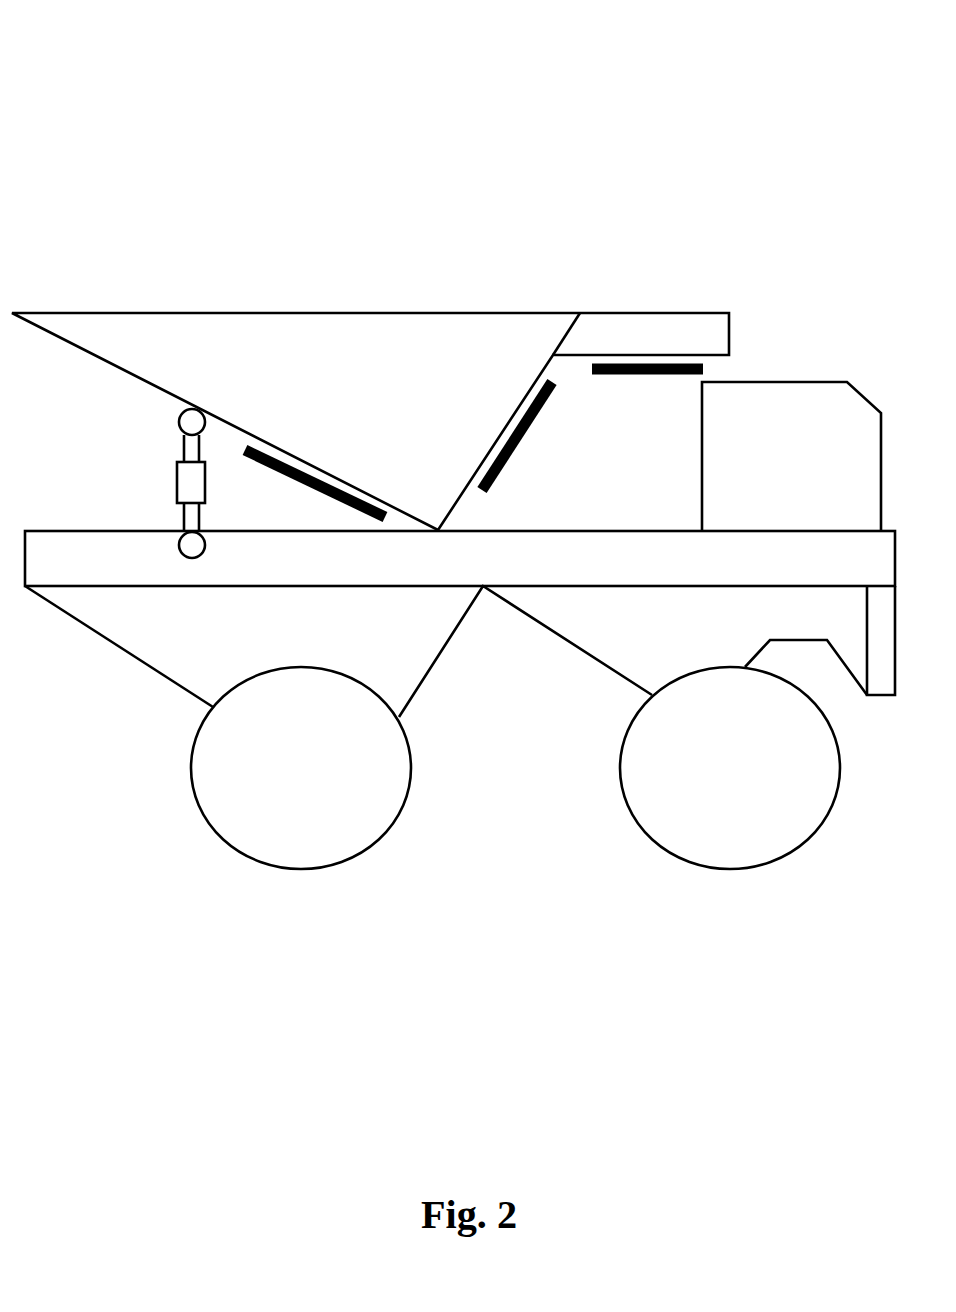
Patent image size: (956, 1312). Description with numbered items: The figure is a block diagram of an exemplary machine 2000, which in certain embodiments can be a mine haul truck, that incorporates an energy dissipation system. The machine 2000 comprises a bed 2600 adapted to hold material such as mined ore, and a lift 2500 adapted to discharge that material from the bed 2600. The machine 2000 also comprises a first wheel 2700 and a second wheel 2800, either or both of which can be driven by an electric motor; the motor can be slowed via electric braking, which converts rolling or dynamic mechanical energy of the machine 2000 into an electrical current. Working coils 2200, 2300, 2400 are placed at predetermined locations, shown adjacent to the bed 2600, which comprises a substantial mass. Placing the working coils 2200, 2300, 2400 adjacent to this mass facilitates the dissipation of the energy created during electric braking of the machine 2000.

The machine 2000 is at (112, 43).
The working coil 2200 is at (301, 489).
The working coil 2300 is at (521, 455).
The working coil 2400 is at (647, 408).
The lift 2500 is at (155, 483).
The bed 2600 is at (370, 421).
The first wheel 2700 is at (301, 768).
The second wheel 2800 is at (730, 768).